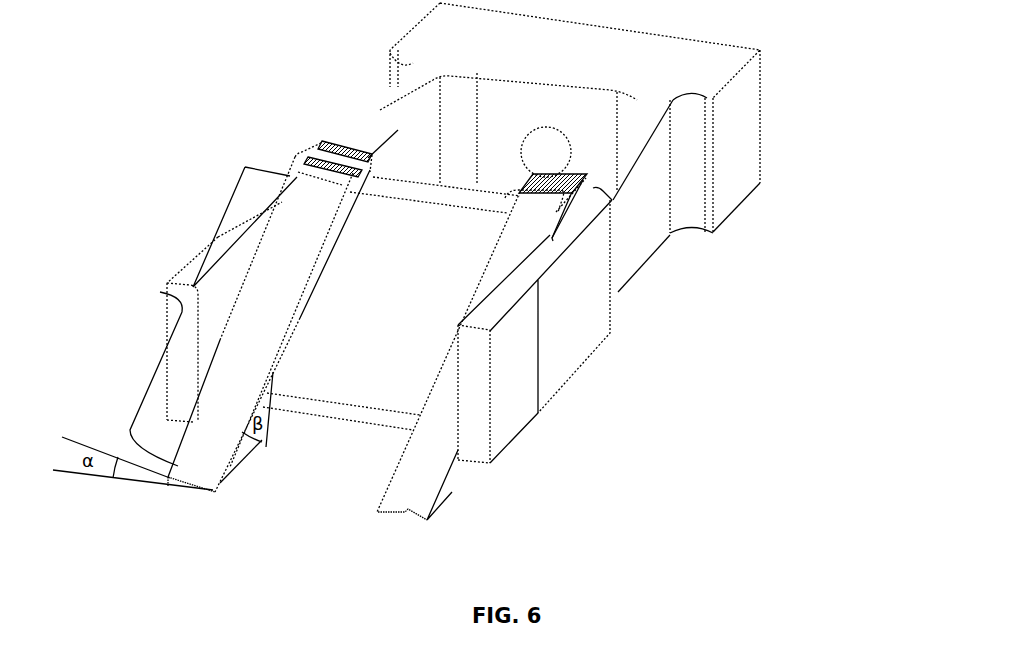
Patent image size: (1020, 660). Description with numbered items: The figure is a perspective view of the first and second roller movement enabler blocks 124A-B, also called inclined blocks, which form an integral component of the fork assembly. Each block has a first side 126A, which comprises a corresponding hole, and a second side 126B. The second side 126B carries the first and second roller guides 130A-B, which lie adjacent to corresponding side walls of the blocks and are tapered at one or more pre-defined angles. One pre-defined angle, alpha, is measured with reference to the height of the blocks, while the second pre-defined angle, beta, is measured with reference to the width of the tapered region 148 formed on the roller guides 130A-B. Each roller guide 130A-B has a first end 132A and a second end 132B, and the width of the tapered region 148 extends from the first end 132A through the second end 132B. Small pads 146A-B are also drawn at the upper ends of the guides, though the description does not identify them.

The first and second roller movement enabler blocks 124A-B is at (717, 343).
The first side 126A is at (177, 408).
The second side 126B is at (750, 117).
The first and second roller guides 130A-B is at (448, 467).
The first end 132A is at (505, 212).
The second end 132B is at (427, 520).
The hatched pads 146A-B is at (547, 185).
The tapered region 148 is at (160, 292).